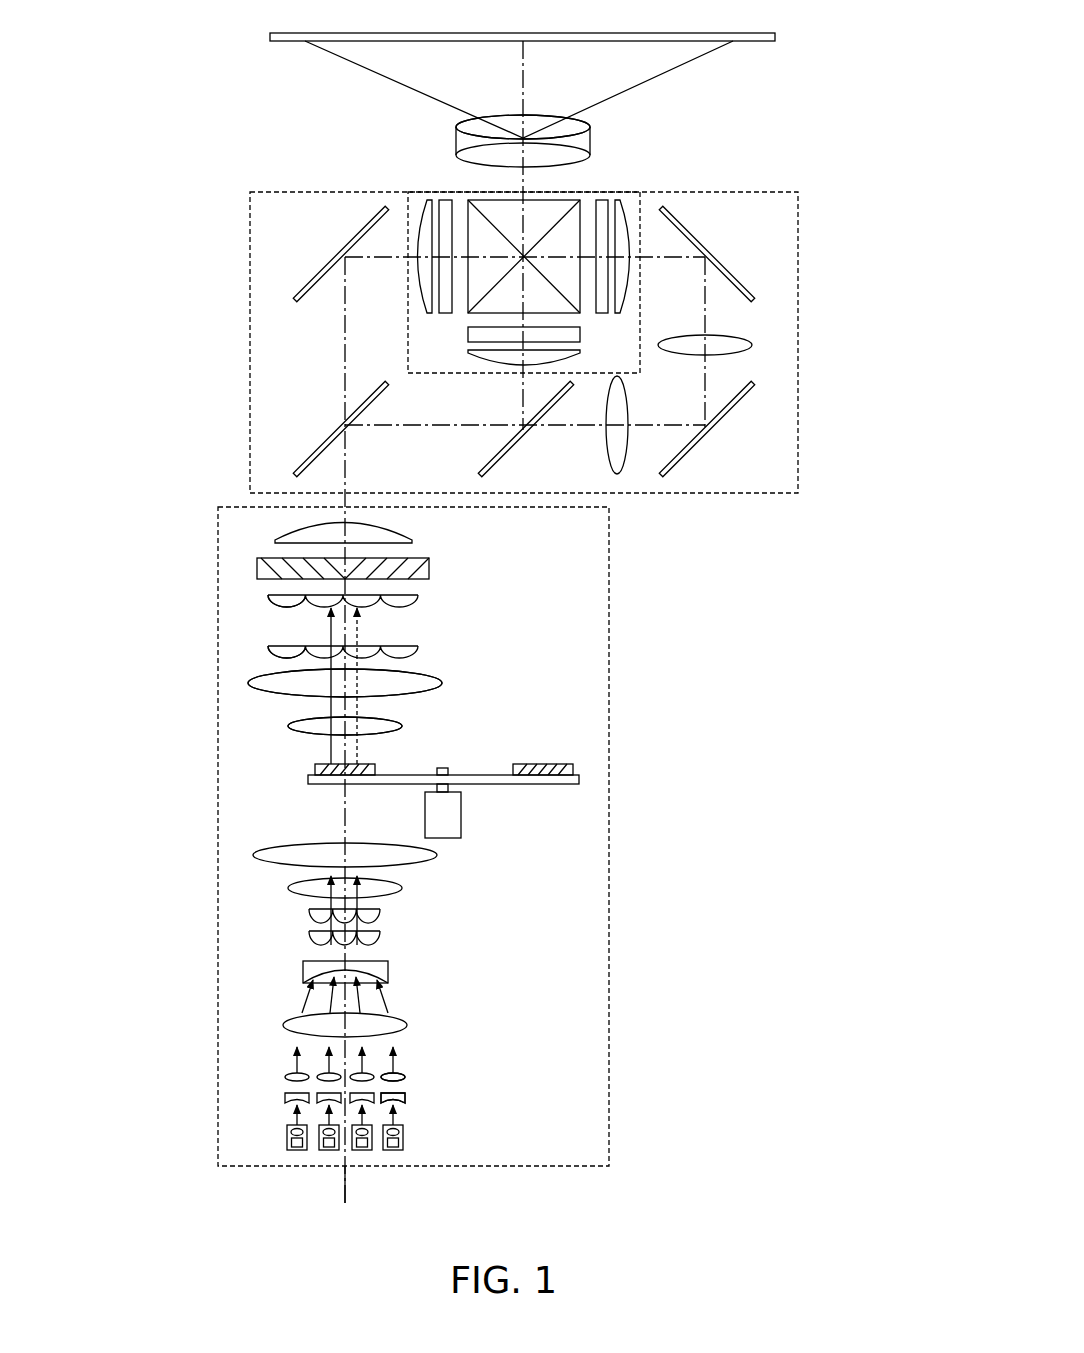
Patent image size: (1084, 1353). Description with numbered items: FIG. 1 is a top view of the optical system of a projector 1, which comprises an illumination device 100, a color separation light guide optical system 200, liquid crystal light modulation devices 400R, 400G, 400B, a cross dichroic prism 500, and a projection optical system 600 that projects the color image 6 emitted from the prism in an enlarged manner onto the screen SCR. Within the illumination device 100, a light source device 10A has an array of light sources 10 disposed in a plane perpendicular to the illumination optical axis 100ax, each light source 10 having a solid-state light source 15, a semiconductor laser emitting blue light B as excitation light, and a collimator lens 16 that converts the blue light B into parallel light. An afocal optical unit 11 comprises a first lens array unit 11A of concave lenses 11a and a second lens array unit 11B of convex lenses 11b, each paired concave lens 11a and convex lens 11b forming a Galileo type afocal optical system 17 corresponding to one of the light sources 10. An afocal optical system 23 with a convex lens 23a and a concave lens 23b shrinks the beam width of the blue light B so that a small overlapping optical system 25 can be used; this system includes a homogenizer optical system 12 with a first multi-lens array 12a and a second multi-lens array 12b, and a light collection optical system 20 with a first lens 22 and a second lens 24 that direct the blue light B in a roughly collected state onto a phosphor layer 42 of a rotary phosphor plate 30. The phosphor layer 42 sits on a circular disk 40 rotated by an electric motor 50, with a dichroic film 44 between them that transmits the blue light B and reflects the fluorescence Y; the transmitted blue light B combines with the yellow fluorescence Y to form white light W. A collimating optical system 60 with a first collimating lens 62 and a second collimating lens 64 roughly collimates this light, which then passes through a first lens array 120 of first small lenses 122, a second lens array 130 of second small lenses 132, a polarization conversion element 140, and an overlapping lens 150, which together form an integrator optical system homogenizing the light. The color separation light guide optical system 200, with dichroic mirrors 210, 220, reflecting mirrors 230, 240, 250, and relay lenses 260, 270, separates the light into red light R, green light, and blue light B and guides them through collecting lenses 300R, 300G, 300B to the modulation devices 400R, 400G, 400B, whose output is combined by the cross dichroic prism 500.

The projector 1 is at (820, 88).
The screen SCR is at (757, 41).
The projection image light 6 is at (508, 122).
The projection optical system 600 is at (457, 138).
The cross dichroic prism 500 is at (577, 203).
The liquid crystal light modulation device 400R is at (446, 200).
The liquid crystal light modulation device 400G is at (468, 334).
The liquid crystal light modulation device 400B is at (602, 200).
The collecting lens 300R is at (424, 200).
The collecting lens 300G is at (468, 352).
The collecting lens 300B is at (622, 200).
The red light R is at (390, 245).
The blue light B is at (331, 633).
The fluorescence Y is at (358, 626).
The white light W is at (468, 600).
The reflecting mirror 230 is at (296, 298).
The reflecting mirror 250 is at (748, 295).
The relay lens 270 is at (750, 343).
The dichroic mirror 210 is at (313, 455).
The dichroic mirror 220 is at (502, 455).
The relay lens 260 is at (608, 440).
The reflecting mirror 240 is at (720, 410).
The color separation light guide optical system 200 is at (798, 475).
The illumination device 100 is at (609, 893).
The overlapping lens 150 is at (412, 541).
The polarization conversion element 140 is at (429, 570).
The second lens array 130 is at (418, 598).
The second small lens 132 is at (268, 604).
The first lens array 120 is at (418, 648).
The first small lens 122 is at (268, 656).
The collimating optical system 60 is at (168, 705).
The second collimating lens 64 is at (262, 690).
The first collimating lens 62 is at (292, 730).
The rotary phosphor plate 30 is at (489, 767).
The circular disk 40 is at (580, 782).
The phosphor layer 42 is at (545, 764).
The dichroic film 44 is at (573, 771).
The electric motor 50 is at (461, 805).
The overlapping optical system 25 is at (418, 897).
The light collection optical system 20 is at (397, 866).
The second lens 24 is at (437, 855).
The first lens 22 is at (400, 886).
The homogenizer optical system 12 is at (425, 929).
The second multi-lens array 12b is at (380, 916).
The first multi-lens array 12a is at (380, 938).
The afocal optical system 23 is at (412, 998).
The concave lens 23b is at (388, 966).
The convex lens 23a is at (395, 1018).
The light source device 10A is at (358, 1107).
The afocal optical unit 11 is at (332, 1080).
The convex lens 11b is at (285, 1078).
The second lens array unit 11B is at (413, 1077).
The concave lens 11a is at (285, 1098).
The first lens array unit 11A is at (413, 1097).
The afocal optical system 17 is at (170, 1055).
The light source 10 is at (361, 1136).
The collimator lens 16 is at (288, 1132).
The solid-state light source 15 is at (288, 1143).
The illumination optical axis 100ax is at (346, 1178).